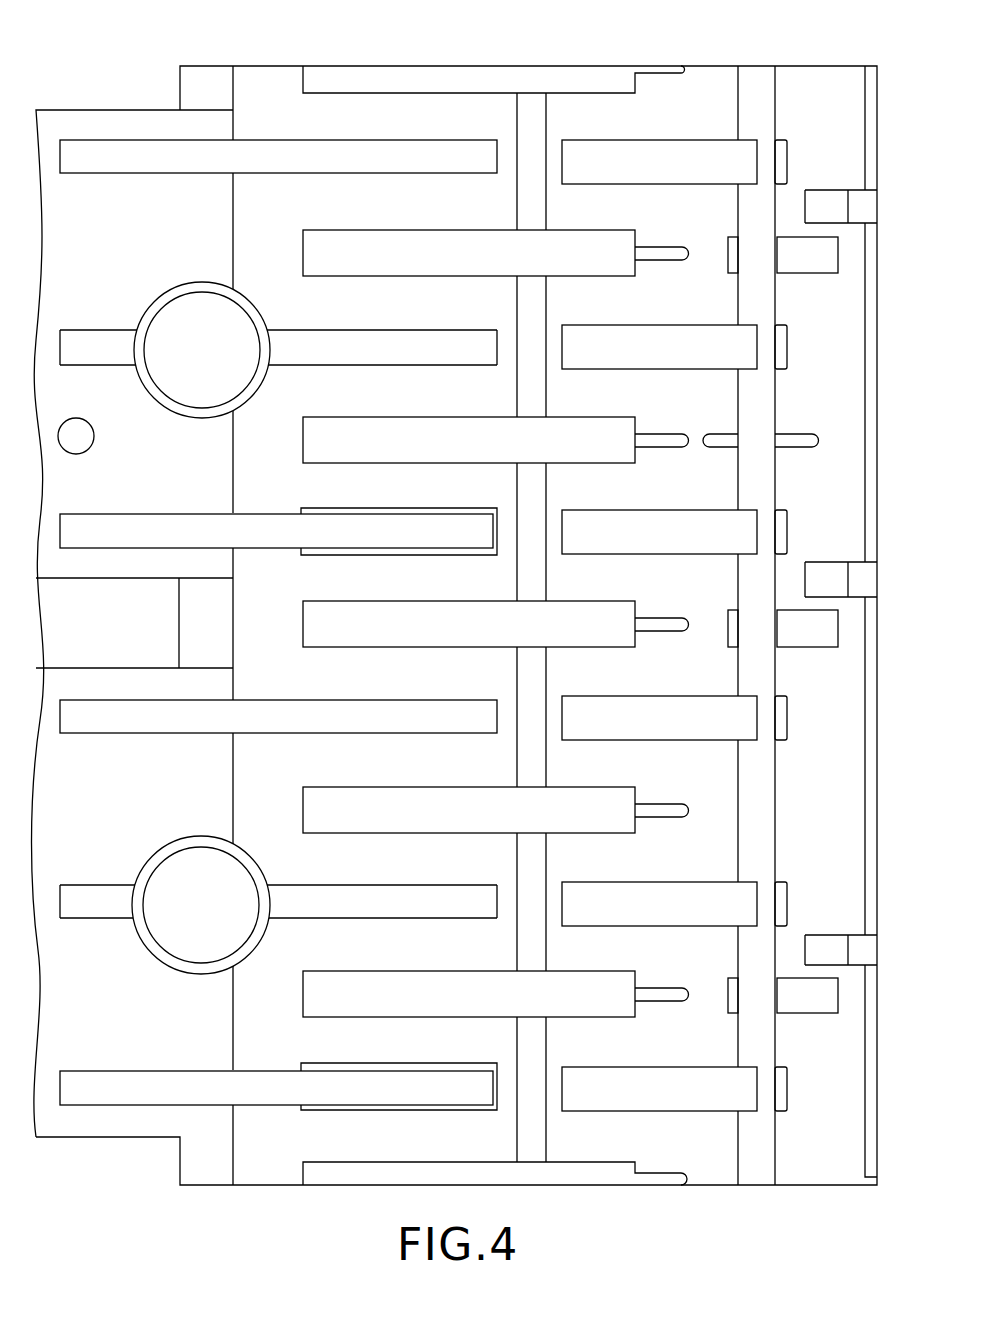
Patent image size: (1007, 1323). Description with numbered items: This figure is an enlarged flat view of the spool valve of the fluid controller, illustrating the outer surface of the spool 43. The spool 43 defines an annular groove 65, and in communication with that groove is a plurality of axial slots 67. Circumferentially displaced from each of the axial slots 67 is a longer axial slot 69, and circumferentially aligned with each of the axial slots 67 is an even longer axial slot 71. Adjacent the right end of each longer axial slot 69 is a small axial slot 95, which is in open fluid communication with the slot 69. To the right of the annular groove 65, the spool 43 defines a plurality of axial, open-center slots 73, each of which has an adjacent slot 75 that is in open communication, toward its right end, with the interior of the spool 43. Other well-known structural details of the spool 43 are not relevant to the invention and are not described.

The spool 43 is at (616, 60).
The annular groove 65 is at (762, 418).
The axial slots 67 is at (648, 543).
The longer axial slot 69 is at (365, 430).
The even longer axial slot 71 is at (252, 530).
The axial open-center slots 73 is at (802, 635).
The slot 75 is at (827, 565).
The small axial slot 95 is at (655, 440).